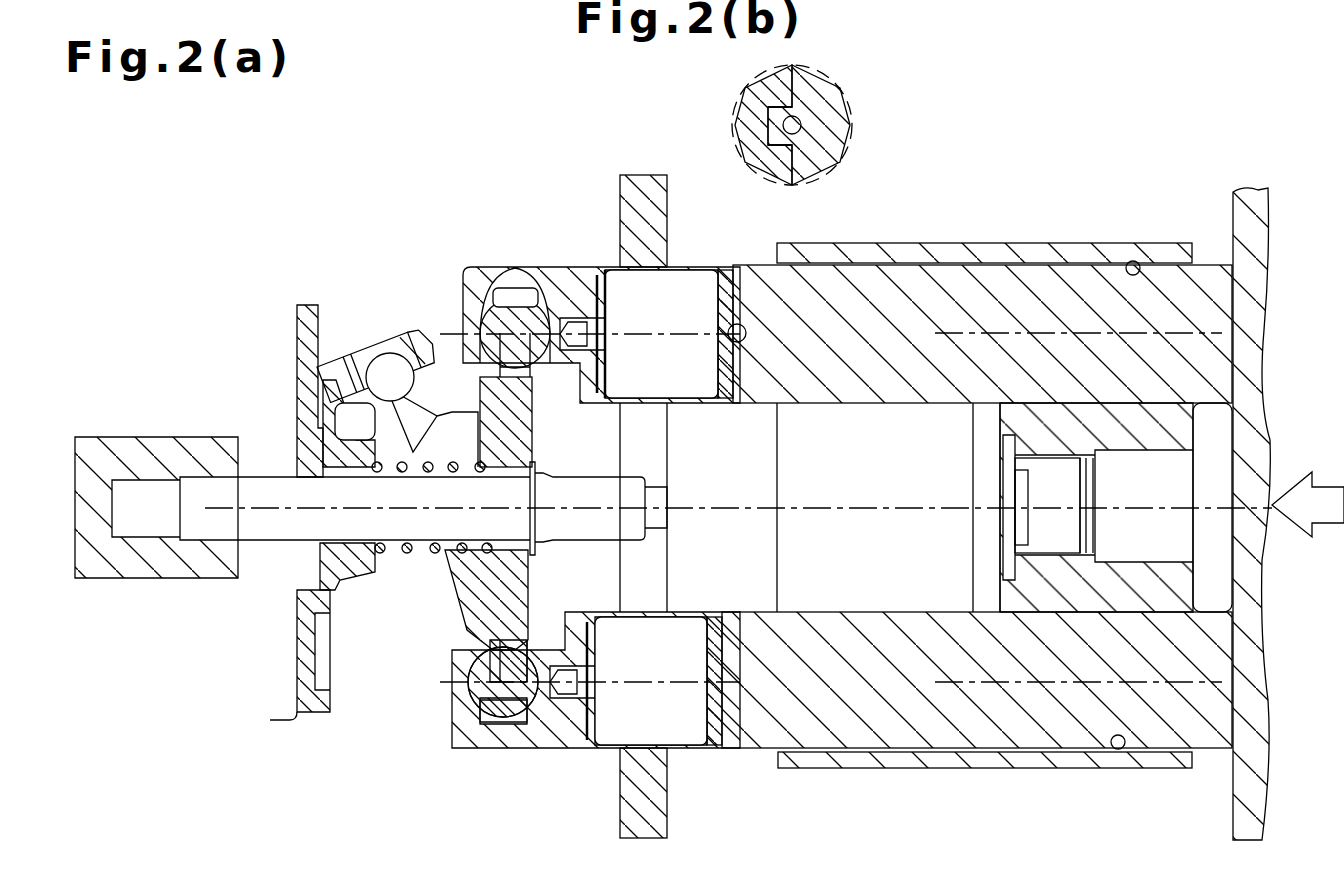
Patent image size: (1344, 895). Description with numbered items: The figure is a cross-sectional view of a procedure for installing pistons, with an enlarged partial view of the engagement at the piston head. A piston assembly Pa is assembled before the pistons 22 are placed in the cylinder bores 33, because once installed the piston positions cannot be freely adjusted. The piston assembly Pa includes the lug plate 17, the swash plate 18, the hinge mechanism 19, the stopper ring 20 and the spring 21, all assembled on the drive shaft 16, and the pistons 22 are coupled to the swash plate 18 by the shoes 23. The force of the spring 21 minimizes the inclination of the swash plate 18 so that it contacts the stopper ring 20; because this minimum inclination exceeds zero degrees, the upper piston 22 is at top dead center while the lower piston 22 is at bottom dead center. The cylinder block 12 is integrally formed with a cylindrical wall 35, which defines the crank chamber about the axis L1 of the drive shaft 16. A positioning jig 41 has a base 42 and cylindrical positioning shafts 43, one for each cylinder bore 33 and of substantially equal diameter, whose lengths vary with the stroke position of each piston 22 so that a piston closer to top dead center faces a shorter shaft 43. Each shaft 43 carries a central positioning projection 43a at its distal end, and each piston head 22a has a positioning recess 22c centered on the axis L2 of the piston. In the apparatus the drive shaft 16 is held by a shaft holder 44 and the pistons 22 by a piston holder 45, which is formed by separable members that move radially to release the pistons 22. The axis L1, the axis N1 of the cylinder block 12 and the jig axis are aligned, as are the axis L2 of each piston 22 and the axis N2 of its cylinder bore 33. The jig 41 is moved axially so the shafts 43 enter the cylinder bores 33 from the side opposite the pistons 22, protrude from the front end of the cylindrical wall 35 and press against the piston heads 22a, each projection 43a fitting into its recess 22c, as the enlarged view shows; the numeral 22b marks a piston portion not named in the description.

In FIG. 2A, the piston assembly Pa is at (294, 260).
In FIG. 2A, the cylinder block 12 is at (1066, 250).
In FIG. 2A, the drive shaft 16 is at (283, 545).
In FIG. 2A, the lug plate 17 is at (290, 718).
In FIG. 2A, the swash plate 18 is at (452, 598).
In FIG. 2A, the hinge mechanism 19 is at (376, 338).
In FIG. 2A, the stopper ring 20 is at (533, 462).
In FIG. 2A, the spring 21 is at (403, 553).
In FIG. 2A, the piston 22 is at (582, 268).
In FIG. 2A, the piston head 22a is at (722, 270).
In FIG. 2B, the piston head 22a is at (752, 100).
In FIG. 2A, the housing recess 22b is at (482, 268).
In FIG. 2B, the positioning recess 22c is at (812, 107).
In FIG. 2A, the shoe 23 is at (515, 262).
In FIG. 2A, the cylinder bore 33 is at (1140, 262).
In FIG. 2A, the cylindrical wall 35 is at (820, 770).
In FIG. 2A, the positioning jig 41 is at (1233, 205).
In FIG. 2A, the base 42 is at (1245, 318).
In FIG. 2A, the positioning shaft 43 is at (862, 405).
In FIG. 2B, the positioning shaft 43 is at (840, 120).
In FIG. 2A, the positioning projection 43a is at (737, 333).
In FIG. 2B, the positioning projection 43a is at (738, 323).
In FIG. 2A, the shaft holder 44 is at (142, 580).
In FIG. 2A, the piston holder 45 is at (620, 822).
In FIG. 2A, the axis of the drive shaft L1 is at (280, 495).
In FIG. 2A, the axis of the piston L2 is at (640, 336).
In FIG. 2A, the axis of the cylinder block N1 is at (1000, 505).
In FIG. 2A, the axis of the cylinder bore N2 is at (1000, 333).